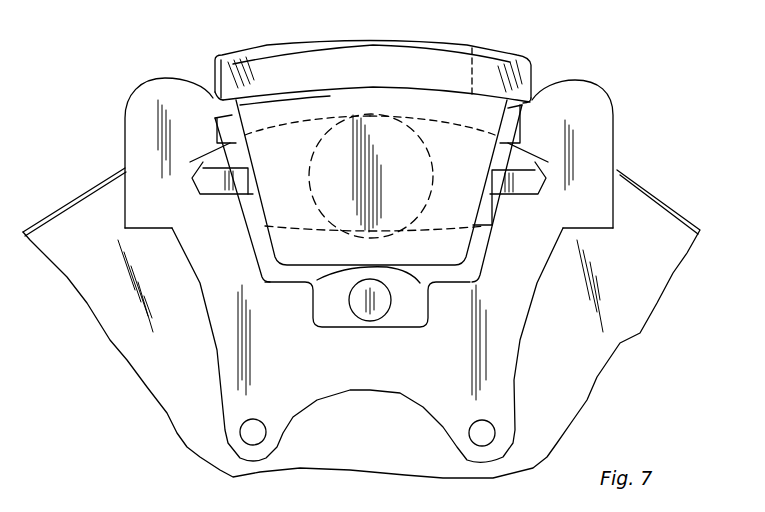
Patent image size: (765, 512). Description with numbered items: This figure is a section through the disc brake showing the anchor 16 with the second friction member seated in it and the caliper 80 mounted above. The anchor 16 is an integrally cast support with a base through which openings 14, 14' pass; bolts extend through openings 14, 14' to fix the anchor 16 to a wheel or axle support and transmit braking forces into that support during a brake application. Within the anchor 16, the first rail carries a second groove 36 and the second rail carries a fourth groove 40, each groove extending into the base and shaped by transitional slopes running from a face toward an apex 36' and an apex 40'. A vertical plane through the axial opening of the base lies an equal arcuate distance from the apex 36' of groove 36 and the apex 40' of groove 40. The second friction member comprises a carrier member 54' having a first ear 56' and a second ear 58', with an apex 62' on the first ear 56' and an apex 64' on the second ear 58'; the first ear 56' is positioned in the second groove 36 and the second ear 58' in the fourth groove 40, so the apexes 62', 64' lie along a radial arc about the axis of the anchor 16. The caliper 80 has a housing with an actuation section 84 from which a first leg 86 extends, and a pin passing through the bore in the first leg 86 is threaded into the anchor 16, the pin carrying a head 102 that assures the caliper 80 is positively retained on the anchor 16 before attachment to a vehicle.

The opening 14 is at (266, 408).
The opening 14' is at (462, 407).
The anchor 16 is at (590, 114).
The second groove 36 is at (522, 209).
The apex 36' is at (580, 171).
The fourth groove 40 is at (218, 212).
The apex 40' is at (164, 163).
The carrier member 54' is at (373, 57).
The first ear 56' is at (570, 139).
The second ear 58' is at (152, 145).
The apex 62' is at (571, 171).
The apex 64' is at (149, 141).
The caliper 80 is at (537, 51).
The actuation section 84 is at (283, 242).
The first leg 86 is at (313, 320).
The head 102 is at (385, 313).